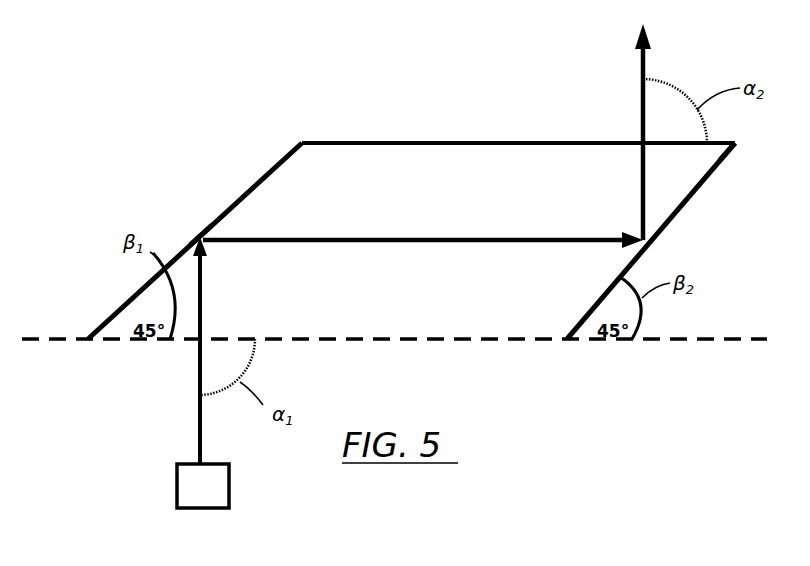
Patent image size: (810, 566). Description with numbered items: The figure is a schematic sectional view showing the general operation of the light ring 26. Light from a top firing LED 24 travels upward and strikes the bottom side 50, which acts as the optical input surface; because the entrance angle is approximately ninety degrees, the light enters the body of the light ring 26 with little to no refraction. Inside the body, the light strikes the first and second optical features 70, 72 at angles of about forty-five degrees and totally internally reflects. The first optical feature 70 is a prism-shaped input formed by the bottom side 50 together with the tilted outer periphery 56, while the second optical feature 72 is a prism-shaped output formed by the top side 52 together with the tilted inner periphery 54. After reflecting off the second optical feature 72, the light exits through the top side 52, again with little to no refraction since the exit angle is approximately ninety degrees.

The top firing LED 24 is at (187, 488).
The light ring 26 is at (440, 215).
The bottom side 50 is at (372, 342).
The top side 52 is at (352, 142).
The inner periphery 54 is at (730, 150).
The outer periphery 56 is at (208, 227).
The first optical feature 70 is at (243, 220).
The second optical feature 72 is at (688, 163).